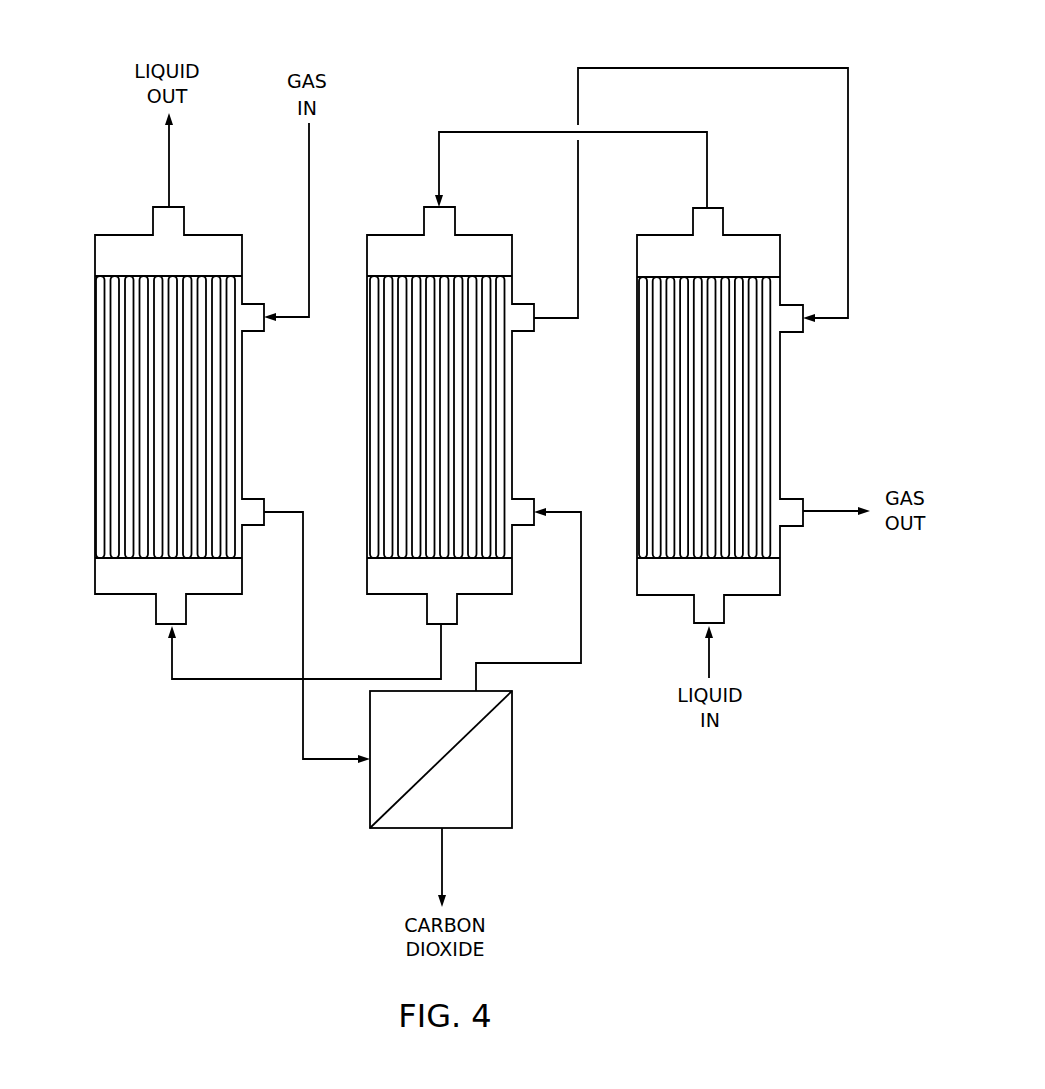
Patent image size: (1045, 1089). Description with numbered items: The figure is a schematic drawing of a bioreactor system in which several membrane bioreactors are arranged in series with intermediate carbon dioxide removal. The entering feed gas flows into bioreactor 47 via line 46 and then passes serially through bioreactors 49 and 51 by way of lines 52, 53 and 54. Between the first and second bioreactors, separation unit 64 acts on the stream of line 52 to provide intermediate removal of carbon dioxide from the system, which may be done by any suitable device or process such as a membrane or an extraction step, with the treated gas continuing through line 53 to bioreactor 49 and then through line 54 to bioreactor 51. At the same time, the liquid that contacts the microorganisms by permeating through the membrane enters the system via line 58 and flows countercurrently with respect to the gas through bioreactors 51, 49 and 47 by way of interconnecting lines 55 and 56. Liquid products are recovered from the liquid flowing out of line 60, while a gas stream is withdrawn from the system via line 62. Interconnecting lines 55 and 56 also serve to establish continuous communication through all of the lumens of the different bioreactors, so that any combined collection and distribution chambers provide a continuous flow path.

The feed gas line 46 is at (309, 170).
The bioreactor 47 is at (95, 416).
The bioreactor 49 is at (367, 416).
The bioreactor 51 is at (637, 416).
The gas line 52 is at (303, 643).
The gas line 53 is at (581, 643).
The gas line 54 is at (848, 193).
The interconnecting liquid line 55 is at (503, 132).
The interconnecting liquid line 56 is at (207, 680).
The liquid inlet line 58 is at (713, 660).
The liquid outlet line 60 is at (169, 167).
The gas outlet line 62 is at (825, 511).
The separation unit 64 is at (513, 760).